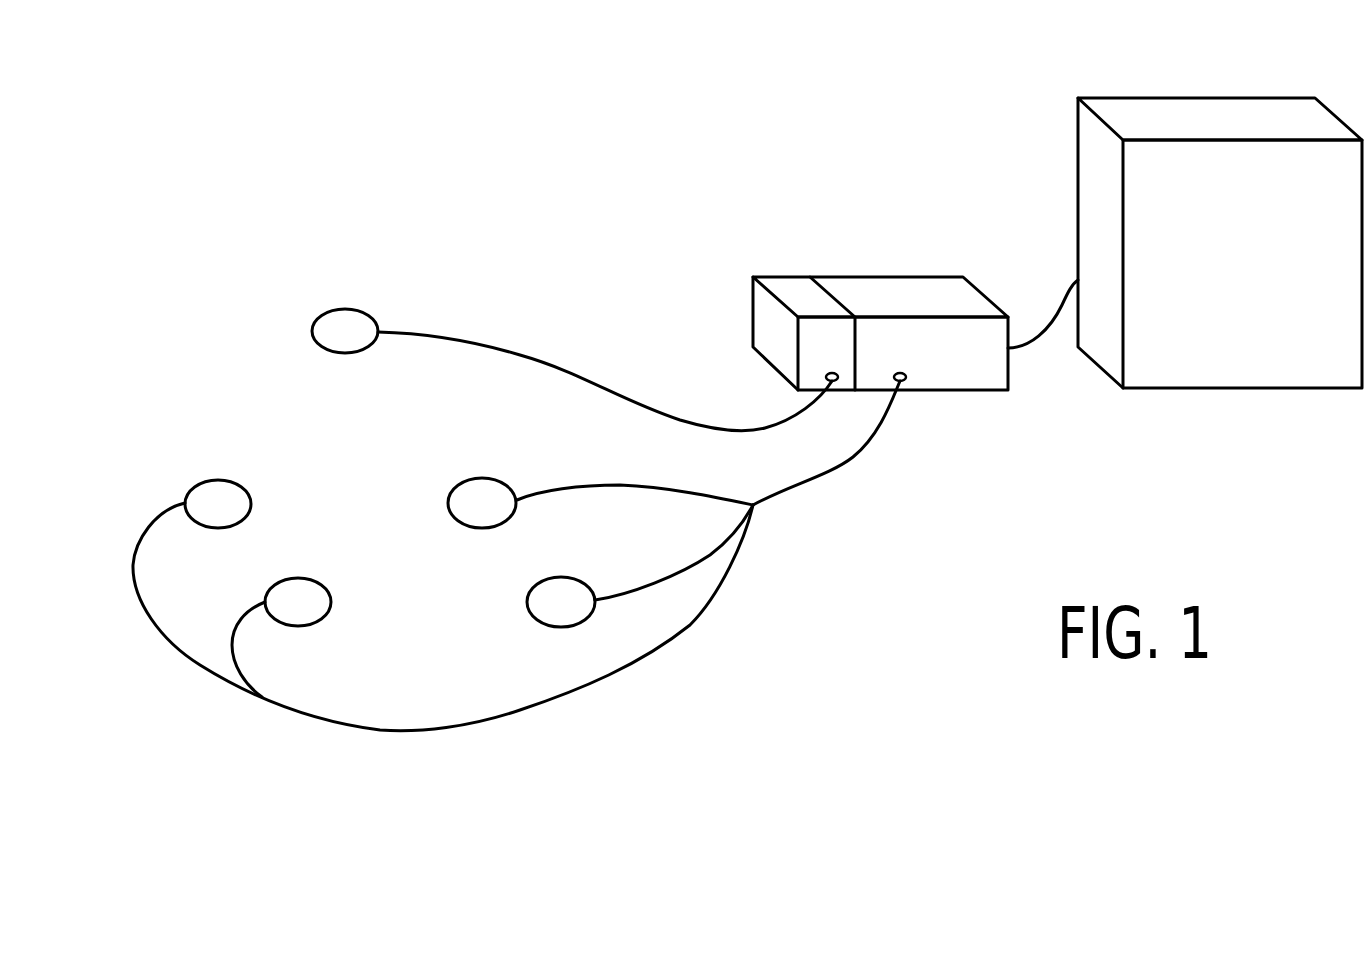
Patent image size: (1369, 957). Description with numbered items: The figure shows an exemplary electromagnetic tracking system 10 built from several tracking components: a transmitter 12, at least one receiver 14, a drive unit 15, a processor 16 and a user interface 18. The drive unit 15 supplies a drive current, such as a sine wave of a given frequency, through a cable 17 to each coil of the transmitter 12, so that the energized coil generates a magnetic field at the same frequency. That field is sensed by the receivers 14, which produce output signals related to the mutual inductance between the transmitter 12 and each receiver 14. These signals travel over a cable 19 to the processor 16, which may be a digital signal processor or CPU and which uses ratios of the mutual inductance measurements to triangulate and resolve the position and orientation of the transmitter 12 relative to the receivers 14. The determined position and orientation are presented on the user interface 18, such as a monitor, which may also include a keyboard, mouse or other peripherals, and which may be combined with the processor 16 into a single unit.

The tracking system 10 is at (186, 152).
The transmitter 12 is at (343, 307).
The receiver 14 is at (218, 480).
The drive unit 15 is at (765, 328).
The processor 16 is at (885, 292).
The cable 17 is at (547, 358).
The user interface 18 is at (1258, 280).
The cable 19 is at (853, 457).